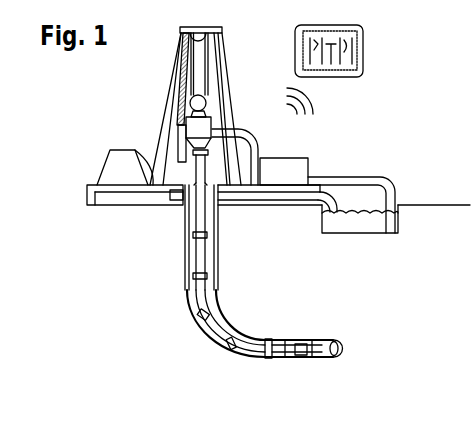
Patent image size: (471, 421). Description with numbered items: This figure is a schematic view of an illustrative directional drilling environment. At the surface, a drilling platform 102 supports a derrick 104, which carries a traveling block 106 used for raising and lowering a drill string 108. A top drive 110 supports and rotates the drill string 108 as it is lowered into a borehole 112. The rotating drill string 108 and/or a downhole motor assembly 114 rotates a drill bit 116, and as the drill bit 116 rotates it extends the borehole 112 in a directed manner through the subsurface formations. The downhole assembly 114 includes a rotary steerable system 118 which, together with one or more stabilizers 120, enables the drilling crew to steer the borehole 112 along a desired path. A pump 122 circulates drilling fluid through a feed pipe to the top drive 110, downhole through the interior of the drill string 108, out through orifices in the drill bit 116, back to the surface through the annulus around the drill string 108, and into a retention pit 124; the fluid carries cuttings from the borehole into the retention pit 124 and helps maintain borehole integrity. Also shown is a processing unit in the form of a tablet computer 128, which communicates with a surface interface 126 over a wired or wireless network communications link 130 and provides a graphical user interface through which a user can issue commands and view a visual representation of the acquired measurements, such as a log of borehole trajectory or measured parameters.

The drilling platform 102 is at (87, 187).
The derrick 104 is at (179, 46).
The traveling block 106 is at (191, 100).
The drill string 108 is at (195, 266).
The top drive 110 is at (186, 127).
The borehole 112 is at (187, 296).
The downhole motor assembly 114 is at (266, 356).
The drill bit 116 is at (331, 340).
The rotary steerable system 118 is at (300, 357).
The stabilizers 120 is at (267, 339).
The pump 122 is at (309, 170).
The retention pit 124 is at (321, 222).
The surface interface 126 is at (259, 158).
The tablet computer 128 is at (296, 46).
The network communications link 130 is at (312, 103).